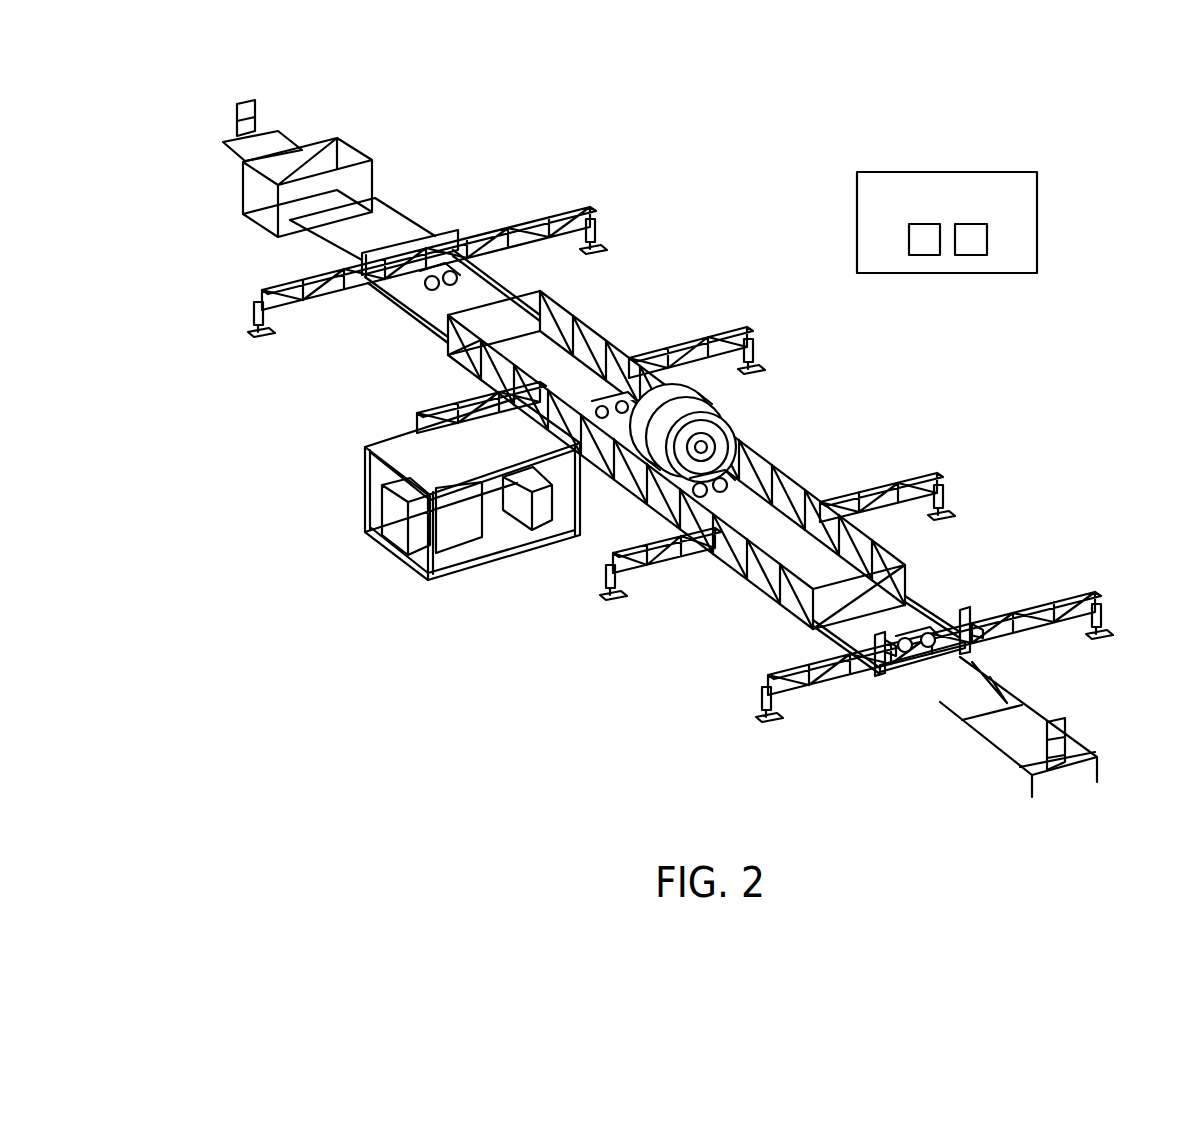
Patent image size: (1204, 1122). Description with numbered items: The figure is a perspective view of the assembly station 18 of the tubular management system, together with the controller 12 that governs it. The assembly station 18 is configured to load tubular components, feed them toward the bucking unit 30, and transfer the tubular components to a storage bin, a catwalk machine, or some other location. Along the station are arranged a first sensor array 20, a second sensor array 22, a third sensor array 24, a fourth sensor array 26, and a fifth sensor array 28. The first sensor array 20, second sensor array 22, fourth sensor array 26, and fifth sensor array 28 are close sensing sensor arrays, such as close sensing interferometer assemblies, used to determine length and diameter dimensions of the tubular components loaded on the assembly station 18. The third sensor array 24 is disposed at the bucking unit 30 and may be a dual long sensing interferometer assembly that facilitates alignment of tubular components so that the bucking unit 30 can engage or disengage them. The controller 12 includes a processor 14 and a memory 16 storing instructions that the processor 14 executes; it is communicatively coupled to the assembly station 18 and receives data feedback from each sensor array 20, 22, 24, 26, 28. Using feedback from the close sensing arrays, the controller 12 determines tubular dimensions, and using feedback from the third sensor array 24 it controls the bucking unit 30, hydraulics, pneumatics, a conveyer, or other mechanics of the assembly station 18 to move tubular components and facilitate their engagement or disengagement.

The controller 12 is at (947, 229).
The processor 14 is at (926, 255).
The memory 16 is at (972, 255).
The assembly station 18 is at (402, 397).
The first sensor array 20 is at (431, 265).
The second sensor array 22 is at (595, 392).
The third sensor array 24 is at (648, 478).
The fourth sensor array 26 is at (745, 460).
The fifth sensor array 28 is at (922, 634).
The bucking unit 30 is at (662, 460).